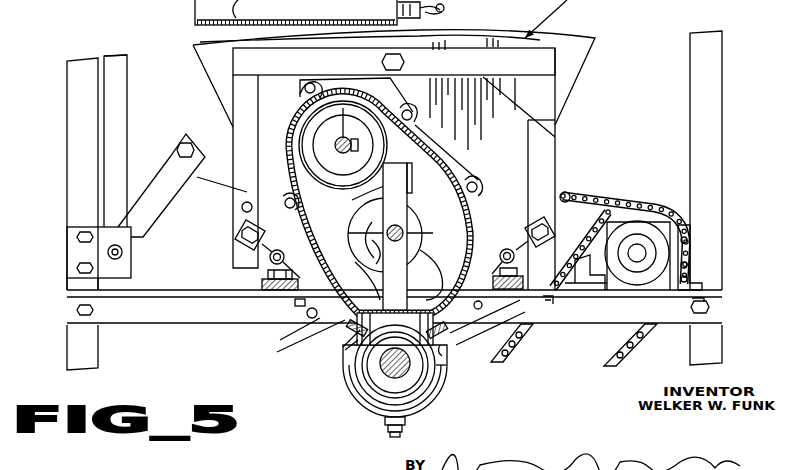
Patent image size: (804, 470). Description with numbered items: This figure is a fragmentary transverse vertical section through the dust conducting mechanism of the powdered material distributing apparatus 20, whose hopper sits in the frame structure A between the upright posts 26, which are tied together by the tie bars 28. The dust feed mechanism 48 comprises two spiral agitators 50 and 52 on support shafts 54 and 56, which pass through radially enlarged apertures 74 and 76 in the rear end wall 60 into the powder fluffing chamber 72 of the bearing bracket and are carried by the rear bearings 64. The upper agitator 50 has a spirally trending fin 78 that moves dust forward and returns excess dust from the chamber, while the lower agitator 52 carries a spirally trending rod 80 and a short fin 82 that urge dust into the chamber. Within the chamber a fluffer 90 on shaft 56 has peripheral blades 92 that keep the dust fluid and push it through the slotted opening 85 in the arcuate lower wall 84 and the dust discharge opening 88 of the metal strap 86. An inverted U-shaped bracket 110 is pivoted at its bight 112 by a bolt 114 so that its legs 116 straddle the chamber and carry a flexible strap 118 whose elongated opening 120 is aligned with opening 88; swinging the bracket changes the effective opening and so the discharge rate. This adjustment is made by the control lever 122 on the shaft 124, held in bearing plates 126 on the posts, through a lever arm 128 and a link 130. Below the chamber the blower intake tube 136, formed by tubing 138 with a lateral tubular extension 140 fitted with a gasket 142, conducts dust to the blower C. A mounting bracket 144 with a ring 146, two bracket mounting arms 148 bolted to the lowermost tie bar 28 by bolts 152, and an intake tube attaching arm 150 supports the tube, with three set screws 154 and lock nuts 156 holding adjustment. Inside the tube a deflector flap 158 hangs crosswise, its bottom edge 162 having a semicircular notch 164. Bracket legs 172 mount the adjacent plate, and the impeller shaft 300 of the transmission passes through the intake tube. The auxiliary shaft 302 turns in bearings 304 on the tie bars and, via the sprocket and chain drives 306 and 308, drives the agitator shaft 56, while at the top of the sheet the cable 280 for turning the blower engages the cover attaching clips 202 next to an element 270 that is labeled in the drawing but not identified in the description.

The powdered material distributing apparatus 20 is at (615, 88).
The posts 26 is at (80, 93).
The tie bars 28 is at (139, 308).
The dust feed mechanism 48 is at (473, 216).
The spiral dust agitator 50 is at (298, 153).
The spiral dust agitator 52 is at (375, 256).
The support shaft 54 is at (346, 139).
The support shaft 56 is at (399, 234).
The end wall 60 is at (508, 156).
The rear bearings 64 is at (414, 132).
The powder fluffing chamber 72 is at (430, 150).
The aperture 74 is at (312, 124).
The aperture 76 is at (372, 222).
The spirally trending fin 78 is at (357, 181).
The spirally trending rod 80 is at (441, 258).
The fin 82 is at (372, 240).
The lower wall 84 is at (515, 258).
The slotted opening 85 is at (430, 293).
The metal strap 86 is at (376, 288).
The dust discharge opening 88 is at (350, 348).
The fluffer 90 is at (352, 200).
The blades 92 is at (411, 181).
The inverted U-shaped bracket 110 is at (549, 50).
The bight 112 is at (328, 69).
The bolt 114 is at (404, 63).
The legs 116 is at (536, 145).
The strap 118 is at (262, 283).
The elongated opening 120 is at (310, 334).
The control lever 122 is at (113, 68).
The shaft 124 is at (123, 250).
The bearing plates 126 is at (135, 268).
The lever arm 128 is at (147, 165).
The link 130 is at (208, 192).
The blower intake tube 136 is at (360, 401).
The tubing 138 is at (366, 392).
The lateral tubular extension 140 is at (395, 330).
The gasket 142 is at (481, 307).
The mounting bracket 144 is at (366, 412).
The ring 146 is at (428, 396).
The bracket mounting arms 148 is at (300, 330).
The intake tube attaching arm 150 is at (406, 418).
The bolts 152 is at (298, 306).
The set screws 154 is at (403, 429).
The lock nuts 156 is at (442, 350).
The deflector flap 158 is at (443, 372).
The bottom edge 162 is at (370, 379).
The notch 164 is at (362, 367).
The legs 172 is at (549, 297).
The cover attaching clips 202 is at (444, 11).
The spout 270 is at (299, 9).
The cable 280 is at (394, 13).
The impeller shaft 300 is at (395, 371).
The auxiliary shaft 302 is at (640, 254).
The bearings 304 is at (665, 232).
The sprocket and chain drive 306 is at (657, 194).
The sprocket and chain drive 308 is at (589, 192).
The frame structure A is at (83, 60).
The blower C is at (283, 132).